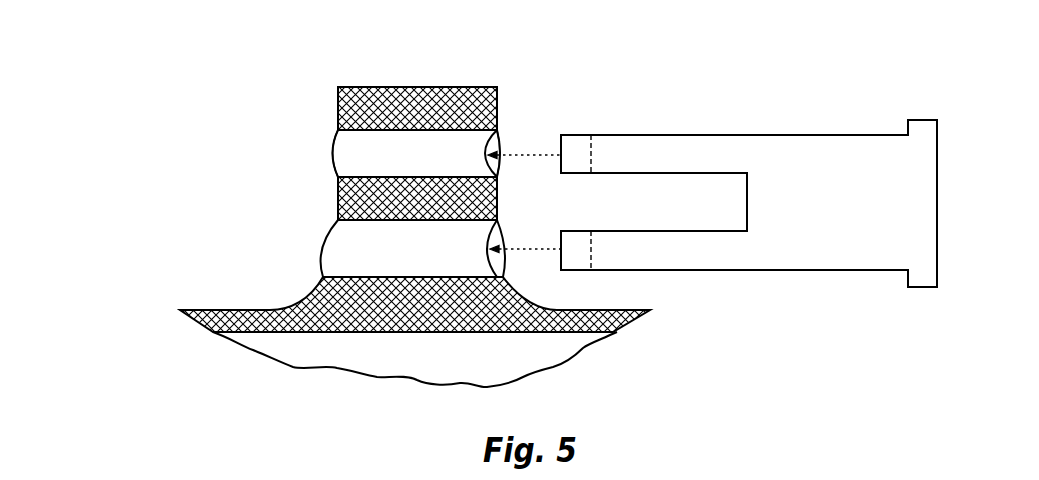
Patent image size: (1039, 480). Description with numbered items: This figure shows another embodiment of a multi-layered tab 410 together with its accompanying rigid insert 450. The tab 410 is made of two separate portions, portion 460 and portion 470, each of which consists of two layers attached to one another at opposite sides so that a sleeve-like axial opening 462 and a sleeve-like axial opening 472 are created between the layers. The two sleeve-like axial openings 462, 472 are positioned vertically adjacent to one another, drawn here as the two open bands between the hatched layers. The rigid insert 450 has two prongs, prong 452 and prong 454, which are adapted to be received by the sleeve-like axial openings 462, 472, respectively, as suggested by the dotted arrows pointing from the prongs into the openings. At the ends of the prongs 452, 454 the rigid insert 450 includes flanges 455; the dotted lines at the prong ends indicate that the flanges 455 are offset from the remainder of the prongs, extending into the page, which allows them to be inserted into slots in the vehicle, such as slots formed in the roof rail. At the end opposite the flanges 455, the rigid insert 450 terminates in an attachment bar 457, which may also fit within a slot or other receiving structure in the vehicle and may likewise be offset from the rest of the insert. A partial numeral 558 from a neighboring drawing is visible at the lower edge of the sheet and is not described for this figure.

The tab 410 is at (312, 98).
The portion 460 is at (350, 146).
The sleeve-like axial opening 462 is at (500, 142).
The sleeve-like axial opening 472 is at (498, 263).
The portion 470 is at (398, 265).
The rigid insert 450 is at (867, 118).
The prong 452 is at (698, 145).
The prong 454 is at (705, 253).
The flanges 455 is at (591, 137).
The attachment bar 457 is at (927, 163).
The partial numeral 558 is at (836, 475).